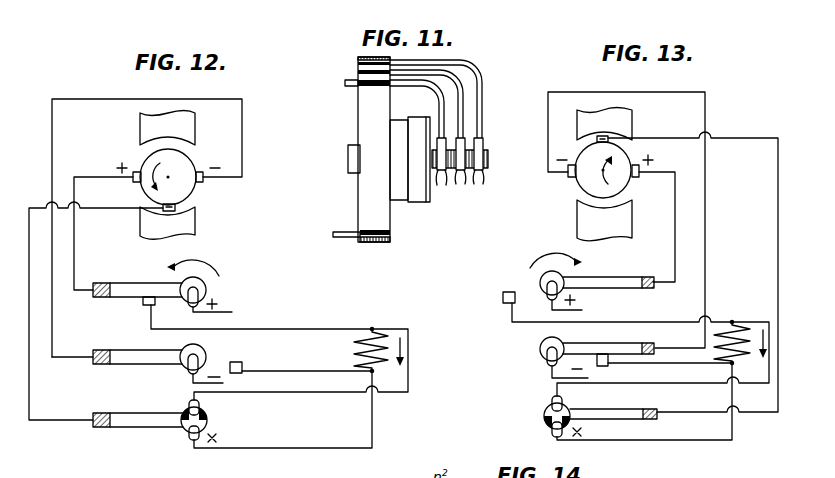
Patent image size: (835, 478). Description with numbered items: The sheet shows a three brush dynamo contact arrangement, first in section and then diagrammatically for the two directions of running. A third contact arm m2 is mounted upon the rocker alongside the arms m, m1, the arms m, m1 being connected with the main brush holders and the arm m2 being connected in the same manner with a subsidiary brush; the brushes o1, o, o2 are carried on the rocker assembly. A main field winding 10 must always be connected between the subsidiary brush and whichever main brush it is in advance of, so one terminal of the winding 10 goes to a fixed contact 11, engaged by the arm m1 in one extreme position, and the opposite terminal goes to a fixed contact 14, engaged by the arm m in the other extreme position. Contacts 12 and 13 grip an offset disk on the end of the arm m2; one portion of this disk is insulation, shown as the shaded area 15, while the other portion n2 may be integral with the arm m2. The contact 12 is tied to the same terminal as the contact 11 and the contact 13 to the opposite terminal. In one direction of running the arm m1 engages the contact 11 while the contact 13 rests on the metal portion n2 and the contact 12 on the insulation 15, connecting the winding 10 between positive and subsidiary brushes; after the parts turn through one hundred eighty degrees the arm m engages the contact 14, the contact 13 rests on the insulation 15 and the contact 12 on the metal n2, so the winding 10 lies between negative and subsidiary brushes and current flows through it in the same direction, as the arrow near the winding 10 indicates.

In FIG. 12, the contact arm m1 is at (135, 277).
In FIG. 11, the contact arm m1 is at (438, 92).
In FIG. 13, the contact arm m1 is at (628, 270).
In FIG. 12, the contact arm m is at (156, 346).
In FIG. 11, the contact arm m is at (462, 82).
In FIG. 13, the contact arm m is at (637, 335).
In FIG. 12, the third contact arm m2 is at (132, 428).
In FIG. 11, the third contact arm m2 is at (465, 57).
In FIG. 13, the third contact arm m2 is at (612, 420).
In FIG. 11, the brush o1 is at (441, 172).
In FIG. 11, the brush o is at (460, 166).
In FIG. 11, the brush o2 is at (481, 167).
In FIG. 13, the main field winding 10 is at (741, 329).
In FIG. 12, the fixed contact 11 is at (143, 301).
In FIG. 12, the contact 12 is at (200, 404).
In FIG. 13, the contact 12 is at (563, 402).
In FIG. 12, the contact 13 is at (190, 440).
In FIG. 13, the contact 13 is at (551, 436).
In FIG. 13, the fixed contact 14 is at (611, 363).
In FIG. 12, the insulation 15 is at (206, 413).
In FIG. 13, the insulation 15 is at (546, 421).
In FIG. 12, the metal portion of disk n2 is at (208, 424).
In FIG. 13, the metal portion of disk n2 is at (551, 404).